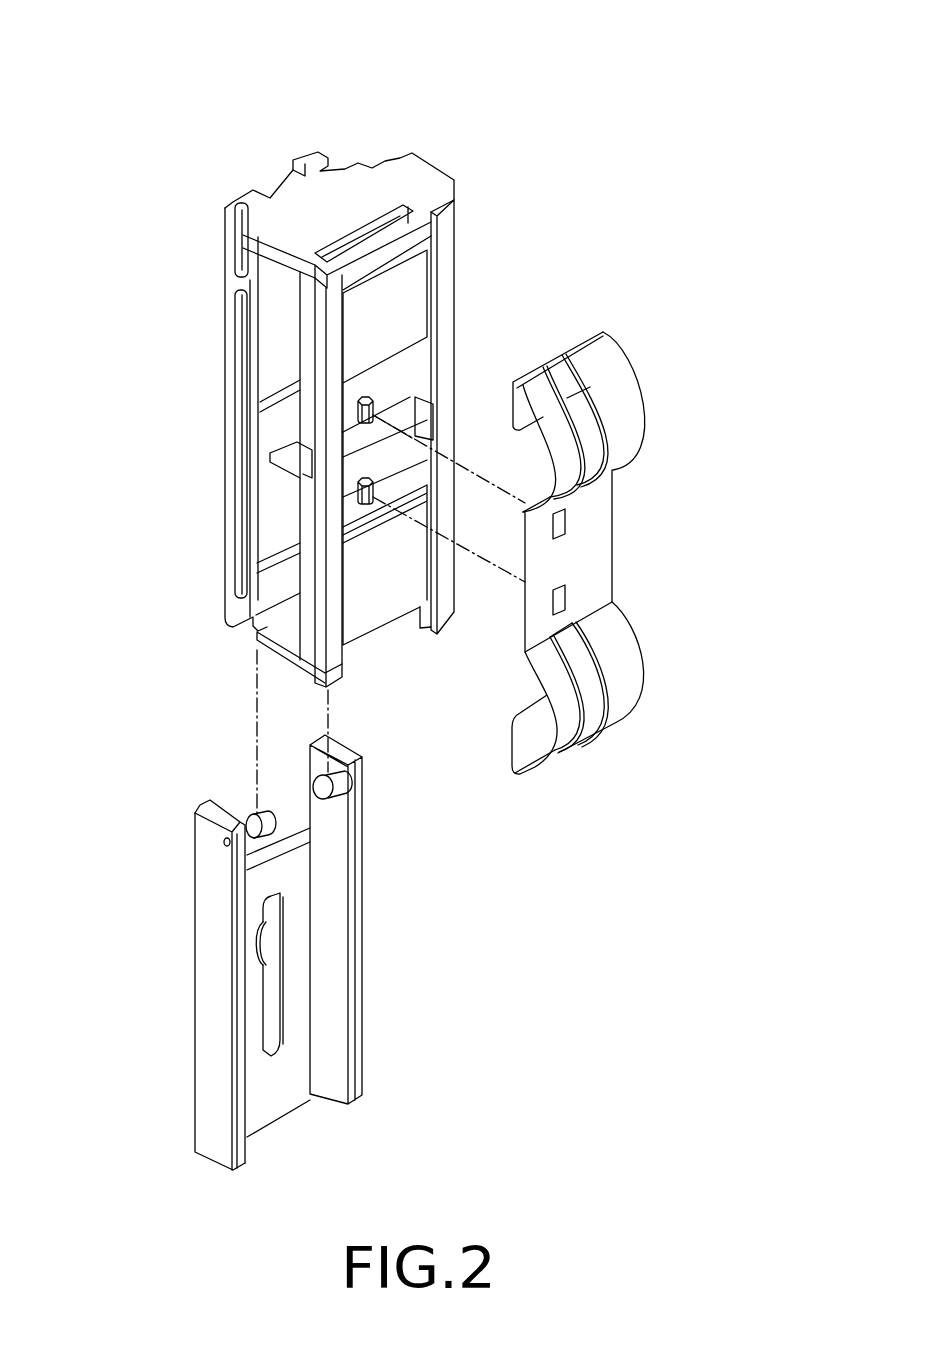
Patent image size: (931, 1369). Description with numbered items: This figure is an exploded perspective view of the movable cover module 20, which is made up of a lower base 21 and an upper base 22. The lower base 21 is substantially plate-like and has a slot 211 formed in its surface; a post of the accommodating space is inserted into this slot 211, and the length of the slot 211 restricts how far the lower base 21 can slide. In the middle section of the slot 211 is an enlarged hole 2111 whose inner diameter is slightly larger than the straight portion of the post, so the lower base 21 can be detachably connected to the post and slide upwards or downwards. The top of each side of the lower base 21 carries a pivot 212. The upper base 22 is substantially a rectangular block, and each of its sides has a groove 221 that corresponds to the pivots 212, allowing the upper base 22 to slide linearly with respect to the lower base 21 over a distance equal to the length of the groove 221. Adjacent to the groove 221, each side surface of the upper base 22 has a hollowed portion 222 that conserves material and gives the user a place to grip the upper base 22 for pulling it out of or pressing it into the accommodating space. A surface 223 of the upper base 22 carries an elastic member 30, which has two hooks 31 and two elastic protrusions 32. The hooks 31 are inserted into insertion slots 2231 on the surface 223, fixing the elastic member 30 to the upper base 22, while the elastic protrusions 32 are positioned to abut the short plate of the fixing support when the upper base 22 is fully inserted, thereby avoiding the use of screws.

The movable cover module 20 is at (433, 30).
The lower base 21 is at (204, 975).
The slot 211 is at (265, 988).
The enlarged hole 2111 is at (285, 937).
The pivot 212 is at (322, 834).
The upper base 22 is at (318, 205).
The groove 221 is at (245, 505).
The hollowed portion 222 is at (283, 340).
The surface 223 is at (408, 295).
The insertion slot 2231 is at (387, 230).
The elastic member 30 is at (605, 554).
The hook 31 is at (509, 405).
The elastic protrusion 32 is at (632, 421).